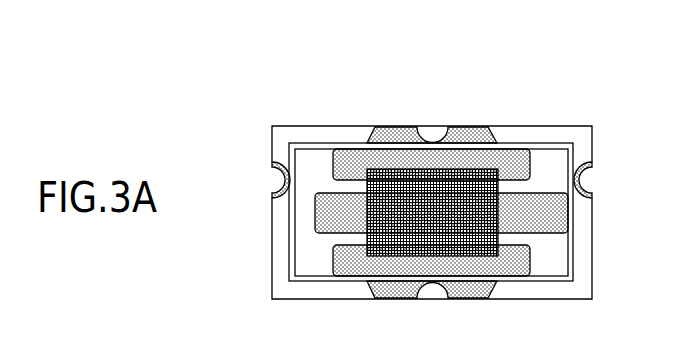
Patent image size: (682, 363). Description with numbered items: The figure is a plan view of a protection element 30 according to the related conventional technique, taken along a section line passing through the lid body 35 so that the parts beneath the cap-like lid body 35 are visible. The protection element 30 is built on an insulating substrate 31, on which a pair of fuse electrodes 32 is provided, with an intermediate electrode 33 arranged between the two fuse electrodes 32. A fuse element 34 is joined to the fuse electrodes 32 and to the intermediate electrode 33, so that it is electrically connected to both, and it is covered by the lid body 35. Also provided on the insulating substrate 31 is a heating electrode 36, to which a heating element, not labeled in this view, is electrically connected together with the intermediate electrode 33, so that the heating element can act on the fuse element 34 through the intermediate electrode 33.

The protection element 30 is at (349, 85).
The insulating substrate 31 is at (283, 290).
The fuse electrodes 32 is at (383, 153).
The intermediate electrode 33 is at (580, 188).
The fuse element 34 is at (385, 249).
The lid body 35 is at (311, 143).
The heating electrode 36 is at (276, 165).